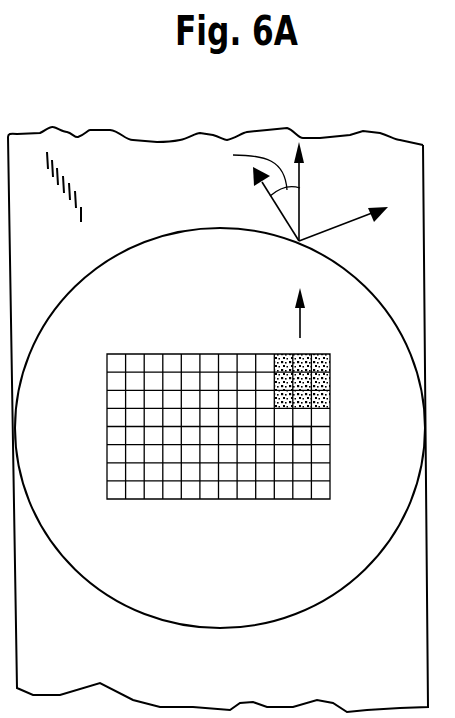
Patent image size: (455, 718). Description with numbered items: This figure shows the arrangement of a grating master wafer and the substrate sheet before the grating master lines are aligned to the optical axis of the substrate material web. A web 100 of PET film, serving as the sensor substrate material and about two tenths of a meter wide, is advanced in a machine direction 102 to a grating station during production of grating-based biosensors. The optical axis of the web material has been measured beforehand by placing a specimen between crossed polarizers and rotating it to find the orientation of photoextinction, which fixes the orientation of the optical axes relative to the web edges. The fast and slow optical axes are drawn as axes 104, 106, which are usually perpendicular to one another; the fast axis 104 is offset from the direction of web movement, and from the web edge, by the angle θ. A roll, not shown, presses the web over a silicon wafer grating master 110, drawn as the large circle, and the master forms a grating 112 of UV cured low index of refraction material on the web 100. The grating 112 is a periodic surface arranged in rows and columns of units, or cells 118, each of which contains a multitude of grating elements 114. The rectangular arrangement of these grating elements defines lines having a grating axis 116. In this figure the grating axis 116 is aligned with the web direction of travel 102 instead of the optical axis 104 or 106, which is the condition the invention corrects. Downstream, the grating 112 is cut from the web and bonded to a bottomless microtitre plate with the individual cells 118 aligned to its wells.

The web 100 is at (348, 135).
The machine direction 102 is at (302, 178).
The fast optical axis 104 is at (281, 212).
The slow optical axis 106 is at (355, 213).
The wafer 110 is at (372, 565).
The grating 112 is at (333, 470).
The grating elements 114 is at (325, 395).
The grating axis 116 is at (297, 320).
The cells 118 is at (325, 434).